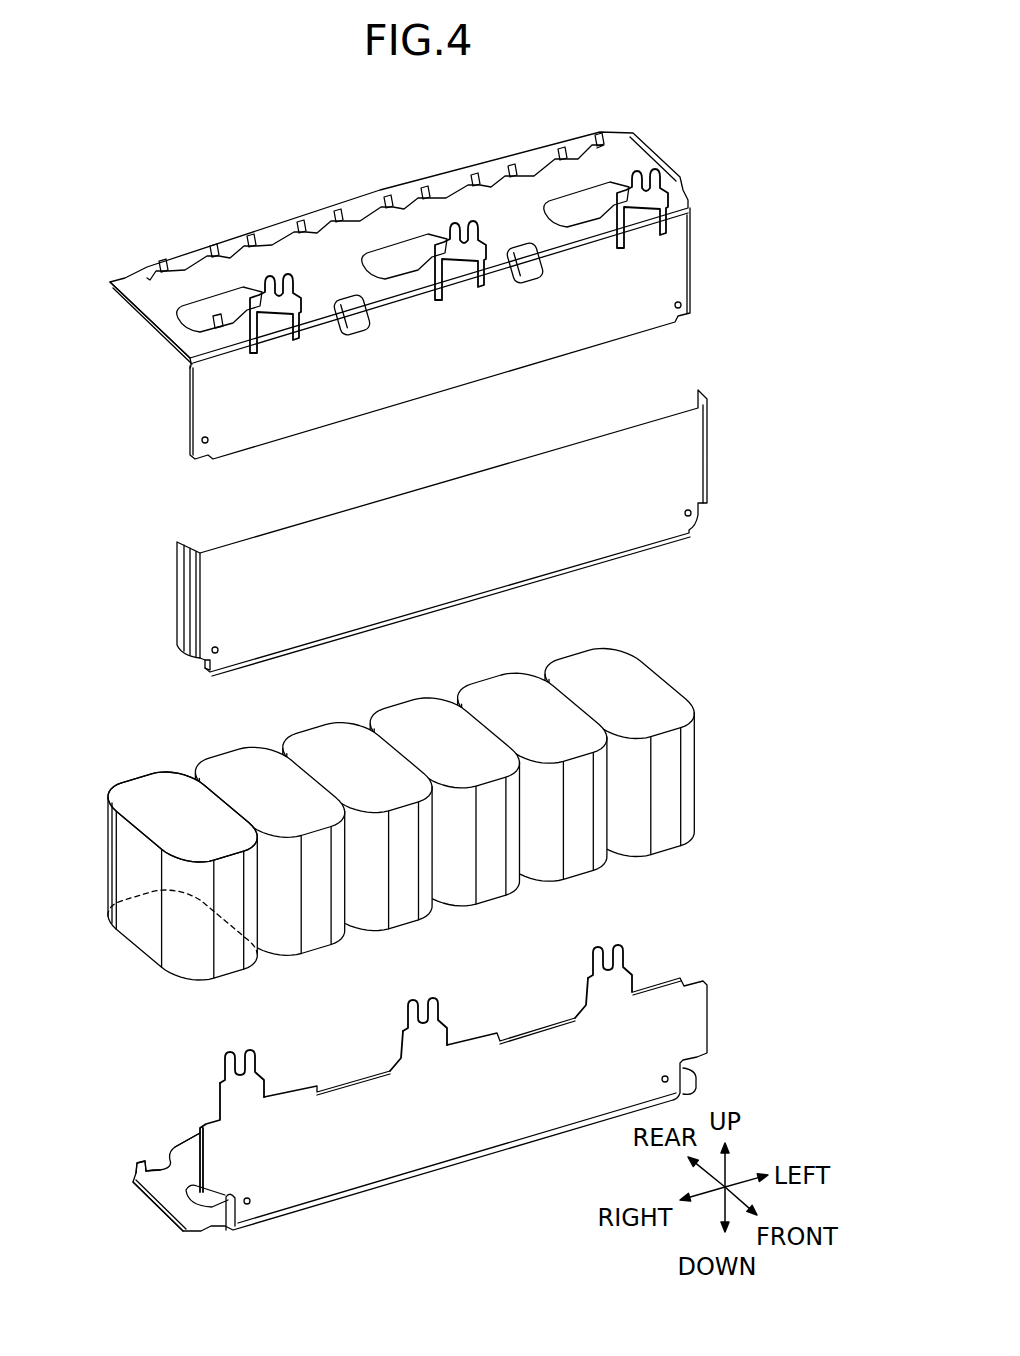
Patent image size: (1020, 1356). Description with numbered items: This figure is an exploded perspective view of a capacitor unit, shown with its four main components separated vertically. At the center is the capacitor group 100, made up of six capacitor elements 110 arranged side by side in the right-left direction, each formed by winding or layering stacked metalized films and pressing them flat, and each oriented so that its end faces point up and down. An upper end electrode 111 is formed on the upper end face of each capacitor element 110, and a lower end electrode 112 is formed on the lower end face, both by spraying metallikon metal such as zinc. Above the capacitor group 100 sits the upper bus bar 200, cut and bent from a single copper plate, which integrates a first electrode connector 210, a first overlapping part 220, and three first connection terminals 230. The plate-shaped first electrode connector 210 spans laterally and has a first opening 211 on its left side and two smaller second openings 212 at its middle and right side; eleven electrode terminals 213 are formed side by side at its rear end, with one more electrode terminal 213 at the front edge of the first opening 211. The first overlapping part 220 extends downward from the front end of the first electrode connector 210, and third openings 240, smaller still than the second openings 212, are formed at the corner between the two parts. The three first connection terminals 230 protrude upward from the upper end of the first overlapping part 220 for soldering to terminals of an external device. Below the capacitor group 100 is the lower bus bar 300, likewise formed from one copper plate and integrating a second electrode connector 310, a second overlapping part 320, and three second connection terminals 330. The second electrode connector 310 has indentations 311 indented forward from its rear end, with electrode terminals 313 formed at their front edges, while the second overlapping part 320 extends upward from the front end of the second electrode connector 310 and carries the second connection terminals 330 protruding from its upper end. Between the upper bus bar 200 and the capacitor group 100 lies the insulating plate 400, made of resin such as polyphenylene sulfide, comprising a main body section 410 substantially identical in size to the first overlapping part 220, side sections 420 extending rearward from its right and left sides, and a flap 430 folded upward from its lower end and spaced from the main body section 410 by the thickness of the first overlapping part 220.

The capacitor group 100 is at (405, 836).
The capacitor element 110 is at (145, 880).
The upper end electrode 111 is at (135, 800).
The lower end electrode 112 is at (180, 937).
The upper bus bar 200 is at (411, 280).
The first electrode connector 210 is at (645, 157).
The first opening 211 is at (110, 302).
The second opening 212 is at (427, 257).
The electrode terminal 213 is at (427, 178).
The first overlapping part 220 is at (403, 377).
The first connection terminal 230 is at (307, 303).
The third opening 240 is at (357, 320).
The lower bus bar 300 is at (427, 1074).
The second electrode connector 310 is at (190, 1138).
The indentation 311 is at (160, 1165).
The electrode terminal 313 is at (135, 1162).
The second overlapping part 320 is at (540, 1105).
The second connection terminal 330 is at (248, 1087).
The insulating plate 400 is at (442, 534).
The main body section 410 is at (612, 532).
The side section 420 is at (702, 397).
The flap 430 is at (207, 668).